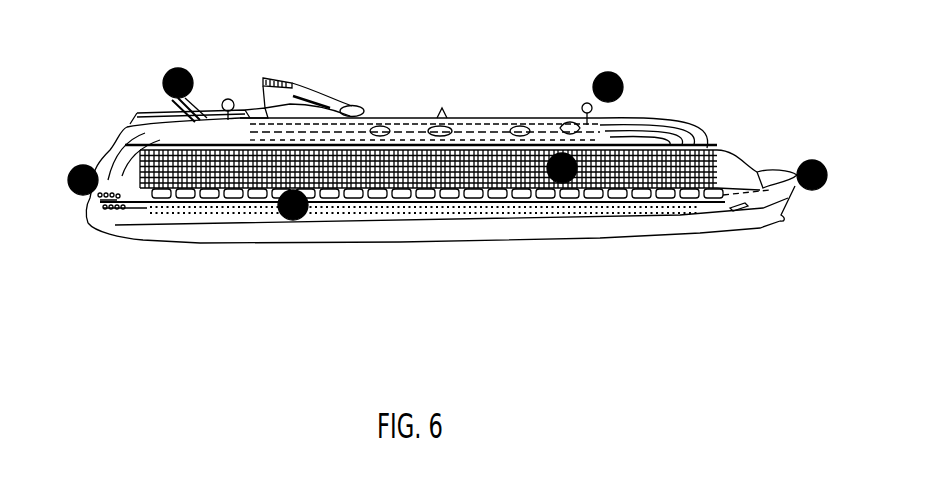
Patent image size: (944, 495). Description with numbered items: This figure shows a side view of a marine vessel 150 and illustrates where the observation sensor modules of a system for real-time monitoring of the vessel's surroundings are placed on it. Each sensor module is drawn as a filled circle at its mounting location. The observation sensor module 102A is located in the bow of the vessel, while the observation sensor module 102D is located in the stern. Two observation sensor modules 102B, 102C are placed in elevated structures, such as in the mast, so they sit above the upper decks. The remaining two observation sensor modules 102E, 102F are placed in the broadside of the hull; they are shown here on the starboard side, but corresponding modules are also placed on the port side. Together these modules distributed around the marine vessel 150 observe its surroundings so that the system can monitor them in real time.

The marine vessel 150 is at (411, 243).
The observation sensor module 102A is at (812, 160).
The observation sensor module 102B is at (608, 72).
The observation sensor module 102C is at (178, 68).
The observation sensor module 102D is at (83, 165).
The observation sensor module 102E is at (293, 220).
The observation sensor module 102F is at (562, 183).